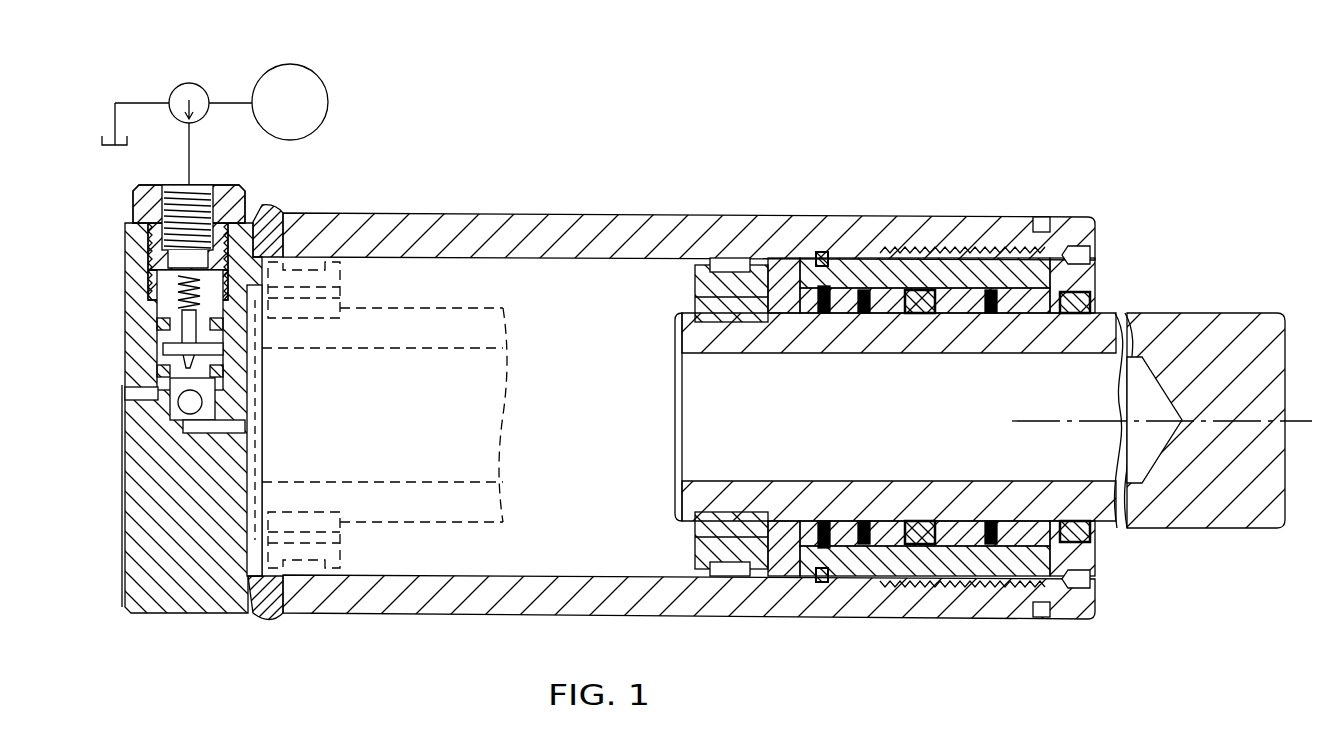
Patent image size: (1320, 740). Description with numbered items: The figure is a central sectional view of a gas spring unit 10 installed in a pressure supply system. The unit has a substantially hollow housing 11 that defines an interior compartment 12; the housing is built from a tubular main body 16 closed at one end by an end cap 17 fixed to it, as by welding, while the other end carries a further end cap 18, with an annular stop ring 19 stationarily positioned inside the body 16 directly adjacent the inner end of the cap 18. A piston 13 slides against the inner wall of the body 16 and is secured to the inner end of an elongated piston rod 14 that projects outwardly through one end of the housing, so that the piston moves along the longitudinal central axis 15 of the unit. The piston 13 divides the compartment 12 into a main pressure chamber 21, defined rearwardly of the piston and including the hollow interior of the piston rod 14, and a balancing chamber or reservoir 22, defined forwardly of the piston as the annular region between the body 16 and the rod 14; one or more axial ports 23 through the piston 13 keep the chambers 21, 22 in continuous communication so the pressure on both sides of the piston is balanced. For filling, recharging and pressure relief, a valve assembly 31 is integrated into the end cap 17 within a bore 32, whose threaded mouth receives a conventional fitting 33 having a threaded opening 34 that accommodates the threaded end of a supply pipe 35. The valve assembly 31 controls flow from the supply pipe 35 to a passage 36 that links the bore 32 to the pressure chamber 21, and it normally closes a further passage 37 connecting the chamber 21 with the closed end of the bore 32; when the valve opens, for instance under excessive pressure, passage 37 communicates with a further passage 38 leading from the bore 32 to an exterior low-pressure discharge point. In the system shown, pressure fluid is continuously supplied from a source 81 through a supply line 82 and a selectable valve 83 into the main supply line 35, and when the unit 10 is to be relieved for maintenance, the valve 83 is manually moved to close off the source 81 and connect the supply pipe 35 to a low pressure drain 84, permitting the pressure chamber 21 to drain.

The gas spring unit 10 is at (1032, 149).
The housing 11 is at (522, 630).
The interior compartment 12 is at (587, 478).
The piston 13 is at (730, 567).
The piston rod 14 is at (1205, 513).
The longitudinal central axis 15 is at (1290, 421).
The main body 16 is at (497, 232).
The end cap 17 is at (200, 577).
The further end cap 18 is at (1080, 280).
The annular stop ring 19 is at (782, 577).
The main pressure chamber 21 is at (588, 397).
The balancing chamber 22 is at (392, 283).
The ports 23 is at (732, 292).
The valve assembly 31 is at (145, 328).
The bore 32 is at (160, 305).
The fitting 33 is at (140, 203).
The threaded opening 34 is at (205, 195).
The supply pipe 35 is at (189, 150).
The passage 36 is at (237, 367).
The further passage 37 is at (228, 432).
The further passage 38 is at (142, 401).
The source 81 is at (303, 90).
The supply line 82 is at (225, 103).
The selectable valve 83 is at (190, 93).
The low pressure drain 84 is at (115, 112).